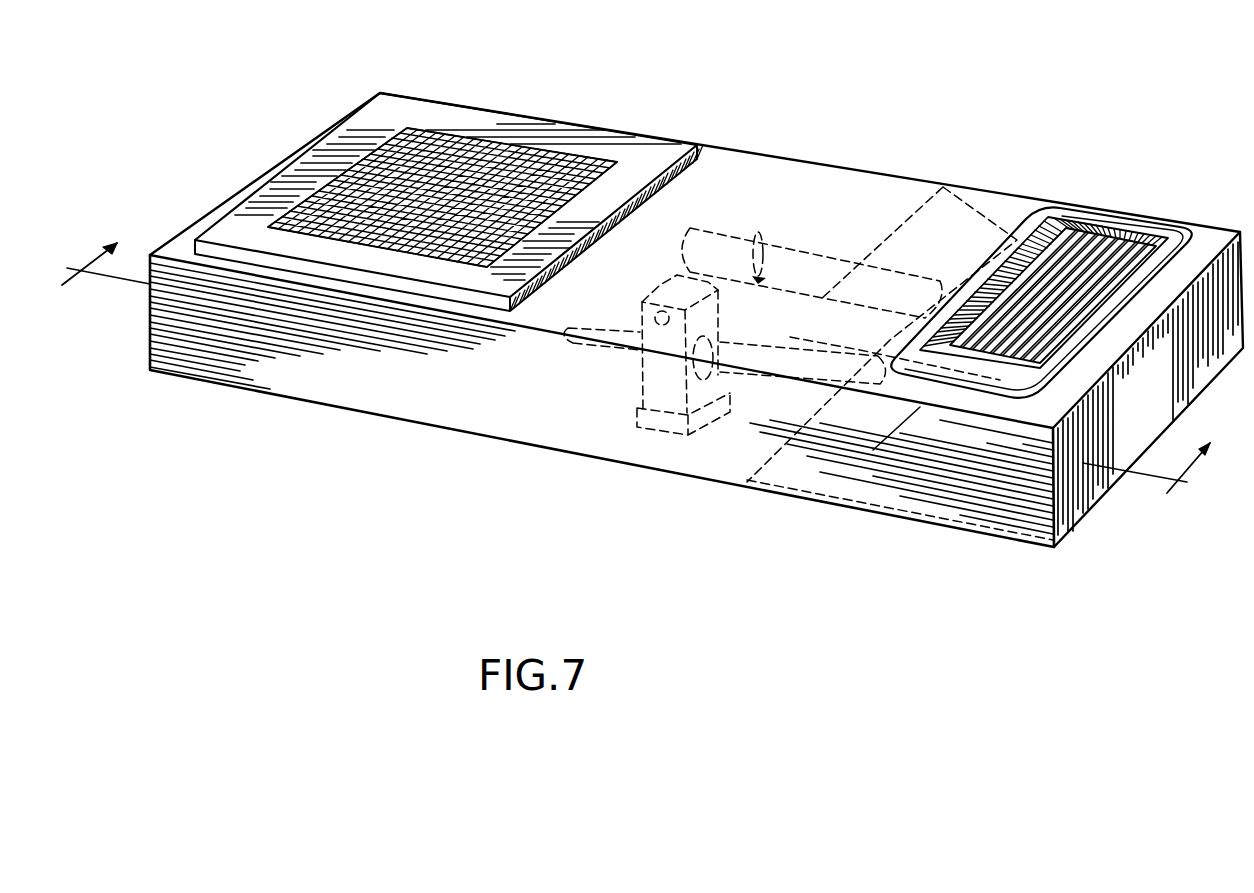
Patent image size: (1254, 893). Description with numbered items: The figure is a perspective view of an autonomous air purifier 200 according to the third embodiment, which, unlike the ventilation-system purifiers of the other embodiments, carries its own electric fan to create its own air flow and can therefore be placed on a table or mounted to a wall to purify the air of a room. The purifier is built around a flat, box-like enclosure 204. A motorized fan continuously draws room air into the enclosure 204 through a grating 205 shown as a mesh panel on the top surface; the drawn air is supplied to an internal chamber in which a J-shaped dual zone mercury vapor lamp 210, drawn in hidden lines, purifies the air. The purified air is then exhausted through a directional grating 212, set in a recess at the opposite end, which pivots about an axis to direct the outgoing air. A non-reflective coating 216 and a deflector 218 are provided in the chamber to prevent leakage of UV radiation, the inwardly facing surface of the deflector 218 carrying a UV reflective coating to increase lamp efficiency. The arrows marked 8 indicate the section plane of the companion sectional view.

The section line 8- 8 is at (626, 383).
The air purifier 200 is at (934, 96).
The enclosure 204 is at (768, 152).
The grating 205 is at (435, 128).
The J-shaped dual zone mercury vapor lamp 210 is at (873, 450).
The directional grating 212 is at (1177, 230).
The non-reflective coating 216 is at (907, 512).
The deflector 218 is at (987, 217).